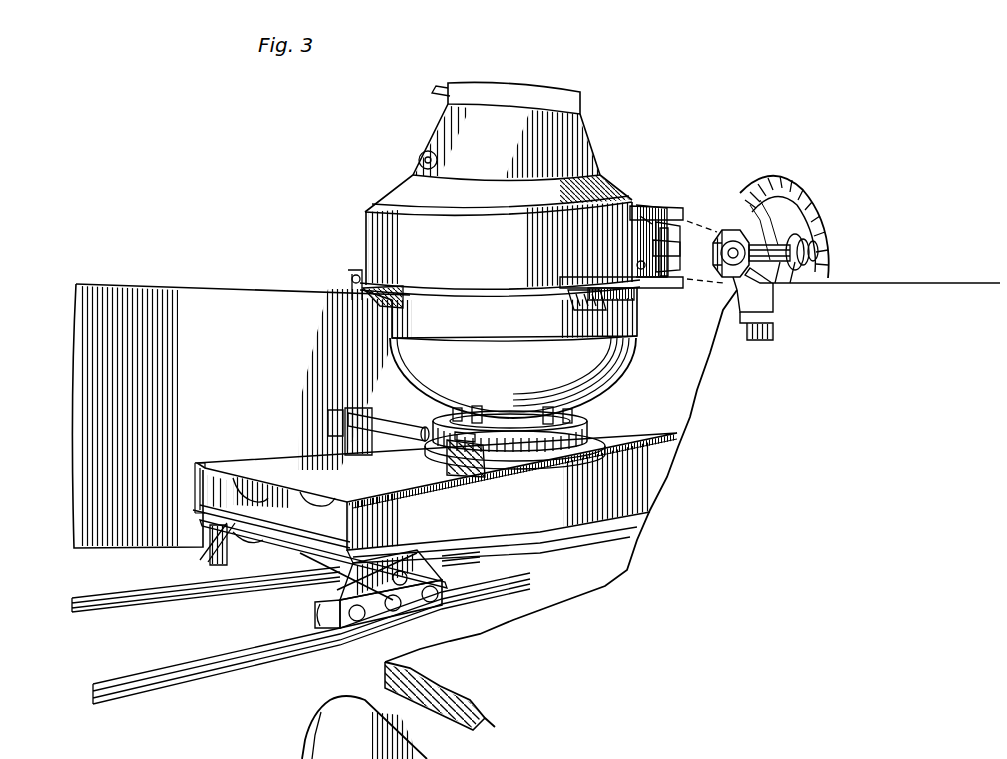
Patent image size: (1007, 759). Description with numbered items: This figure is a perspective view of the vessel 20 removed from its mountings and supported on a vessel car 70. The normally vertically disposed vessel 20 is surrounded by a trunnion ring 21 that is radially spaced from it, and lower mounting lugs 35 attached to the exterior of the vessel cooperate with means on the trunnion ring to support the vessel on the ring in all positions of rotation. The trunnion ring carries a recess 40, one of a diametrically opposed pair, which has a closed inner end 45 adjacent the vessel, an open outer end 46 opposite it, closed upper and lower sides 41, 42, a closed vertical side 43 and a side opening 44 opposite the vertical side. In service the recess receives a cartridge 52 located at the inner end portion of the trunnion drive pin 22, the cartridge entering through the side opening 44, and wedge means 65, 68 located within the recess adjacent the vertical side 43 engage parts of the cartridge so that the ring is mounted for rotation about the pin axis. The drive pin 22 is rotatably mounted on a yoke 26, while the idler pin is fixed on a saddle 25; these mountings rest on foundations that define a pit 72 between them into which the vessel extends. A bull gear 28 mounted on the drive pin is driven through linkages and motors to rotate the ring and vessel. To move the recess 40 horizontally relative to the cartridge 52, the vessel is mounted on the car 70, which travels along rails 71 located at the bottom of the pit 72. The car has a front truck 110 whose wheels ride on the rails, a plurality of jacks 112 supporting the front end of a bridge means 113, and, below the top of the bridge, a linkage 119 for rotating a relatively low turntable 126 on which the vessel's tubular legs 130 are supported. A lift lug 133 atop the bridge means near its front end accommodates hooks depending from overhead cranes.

The vessel 20 is at (585, 150).
The trunnion ring 21 is at (532, 240).
The drive pin 22 is at (778, 240).
The saddle 25 is at (348, 278).
The yoke 26 is at (812, 242).
The bull gear 28 is at (787, 180).
The lower mounting lugs 35 is at (407, 297).
The recess 40 is at (663, 260).
The closed upper side 41 is at (672, 230).
The closed lower side 42 is at (678, 276).
The closed vertical side 43 is at (637, 250).
The side opening 44 is at (662, 243).
The closed inner end 45 is at (660, 230).
The open outer end 46 is at (637, 265).
The cartridge 52 is at (727, 230).
The wedge means 65 is at (637, 223).
The wedge means 68 is at (637, 285).
The car 70 is at (435, 476).
The rails 71 is at (167, 580).
The pit 72 is at (160, 557).
The front truck 110 is at (317, 610).
The jacks 112 is at (325, 518).
The bridge means 113 is at (255, 418).
The linkage 119 is at (440, 458).
The turntable 126 is at (600, 430).
The legs 130 is at (549, 409).
The lift lug 133 is at (382, 420).